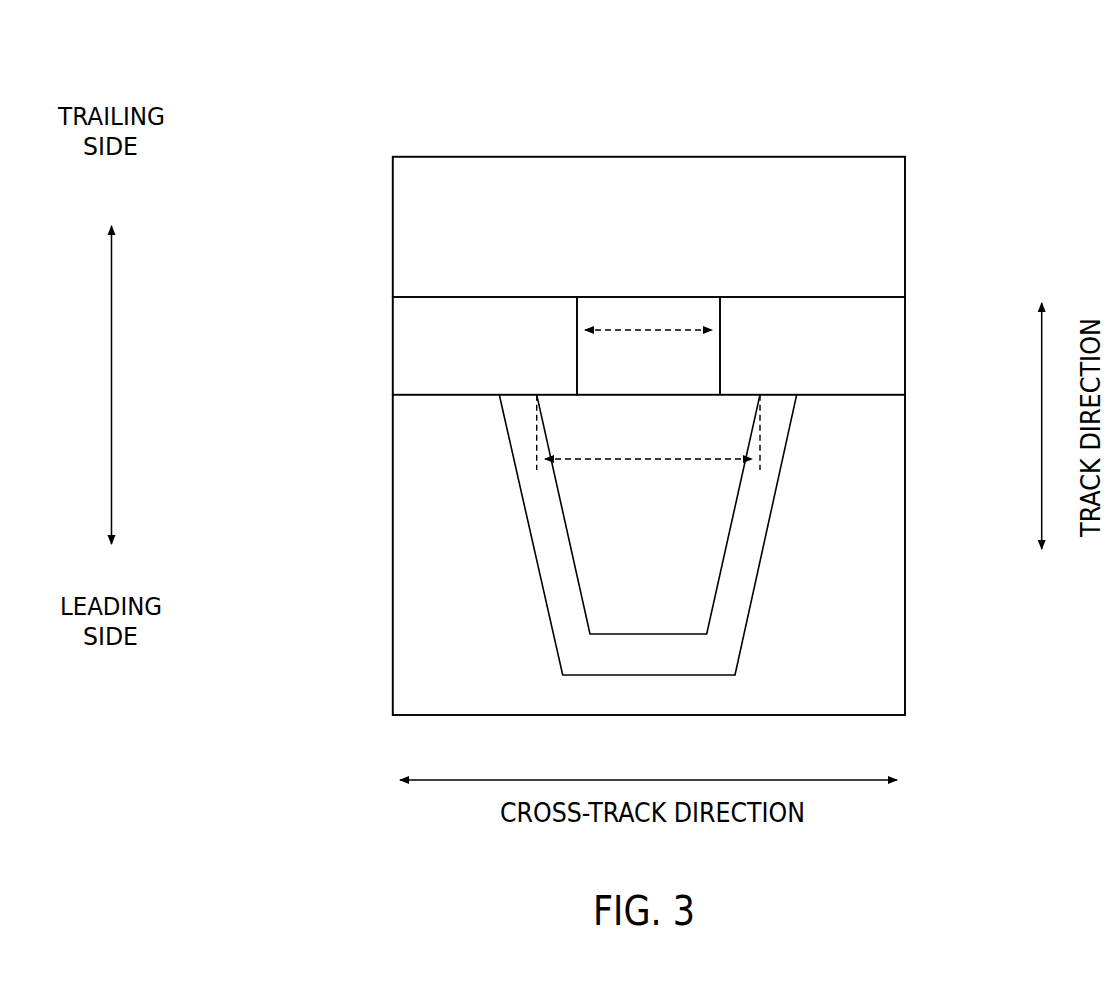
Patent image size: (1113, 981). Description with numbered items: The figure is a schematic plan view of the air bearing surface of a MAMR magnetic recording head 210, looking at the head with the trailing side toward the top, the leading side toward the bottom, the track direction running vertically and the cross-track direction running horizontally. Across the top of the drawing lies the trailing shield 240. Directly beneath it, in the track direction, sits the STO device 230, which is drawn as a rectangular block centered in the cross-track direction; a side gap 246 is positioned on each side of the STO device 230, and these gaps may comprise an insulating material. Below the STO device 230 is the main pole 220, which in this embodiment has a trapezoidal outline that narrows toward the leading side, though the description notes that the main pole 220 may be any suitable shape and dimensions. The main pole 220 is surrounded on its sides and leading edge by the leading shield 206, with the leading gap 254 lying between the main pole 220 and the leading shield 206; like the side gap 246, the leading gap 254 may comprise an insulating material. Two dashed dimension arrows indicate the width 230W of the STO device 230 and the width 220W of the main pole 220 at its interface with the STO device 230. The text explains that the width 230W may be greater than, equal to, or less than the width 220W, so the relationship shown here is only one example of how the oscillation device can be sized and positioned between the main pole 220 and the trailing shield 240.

The MAMR magnetic recording head 210 is at (346, 66).
The trailing shield 240 is at (818, 238).
The side gap 246 is at (503, 358).
The STO device 230 is at (672, 371).
The width of the STO device 230W is at (638, 330).
The leading shield 206 is at (852, 572).
The leading gap 254 is at (652, 667).
The main pole 220 is at (672, 528).
The width of the main pole 220W is at (620, 459).